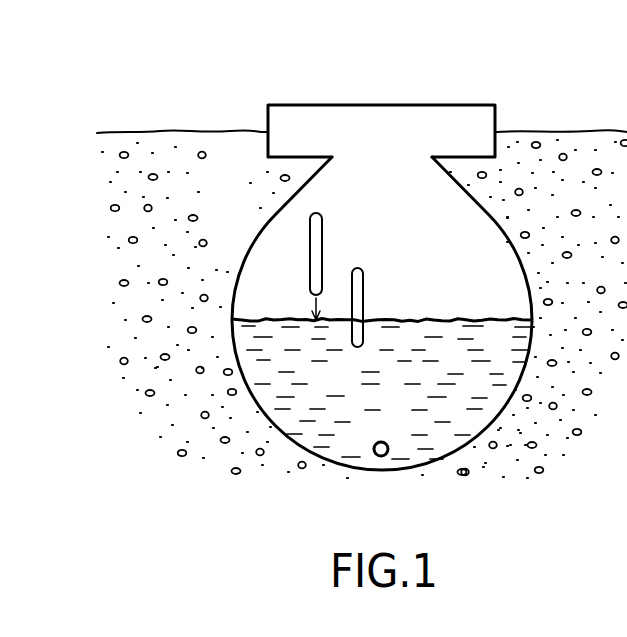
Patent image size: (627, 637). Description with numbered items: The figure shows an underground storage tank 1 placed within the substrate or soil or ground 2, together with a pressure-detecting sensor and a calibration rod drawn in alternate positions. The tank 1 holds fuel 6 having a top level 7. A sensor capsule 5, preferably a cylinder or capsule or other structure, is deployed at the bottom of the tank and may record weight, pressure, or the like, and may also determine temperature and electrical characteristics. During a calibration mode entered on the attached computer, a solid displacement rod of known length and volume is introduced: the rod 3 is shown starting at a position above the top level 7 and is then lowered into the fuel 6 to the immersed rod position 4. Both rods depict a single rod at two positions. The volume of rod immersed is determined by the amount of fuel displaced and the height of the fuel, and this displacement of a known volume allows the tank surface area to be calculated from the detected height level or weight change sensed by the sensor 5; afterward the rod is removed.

The tank 1 is at (350, 254).
The substrate or soil or ground 2 is at (362, 278).
The rod 3 is at (330, 262).
The rod position 4 is at (366, 307).
The sensor (PDS) capsule 5 is at (390, 434).
The fuel 6 is at (382, 389).
The top level 7 is at (382, 313).